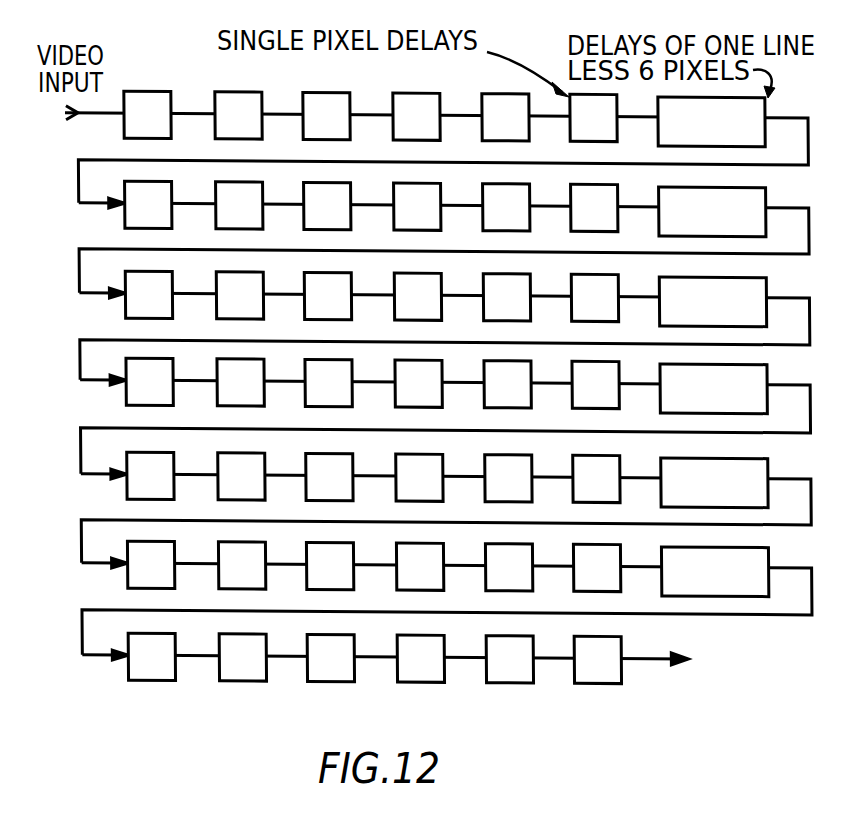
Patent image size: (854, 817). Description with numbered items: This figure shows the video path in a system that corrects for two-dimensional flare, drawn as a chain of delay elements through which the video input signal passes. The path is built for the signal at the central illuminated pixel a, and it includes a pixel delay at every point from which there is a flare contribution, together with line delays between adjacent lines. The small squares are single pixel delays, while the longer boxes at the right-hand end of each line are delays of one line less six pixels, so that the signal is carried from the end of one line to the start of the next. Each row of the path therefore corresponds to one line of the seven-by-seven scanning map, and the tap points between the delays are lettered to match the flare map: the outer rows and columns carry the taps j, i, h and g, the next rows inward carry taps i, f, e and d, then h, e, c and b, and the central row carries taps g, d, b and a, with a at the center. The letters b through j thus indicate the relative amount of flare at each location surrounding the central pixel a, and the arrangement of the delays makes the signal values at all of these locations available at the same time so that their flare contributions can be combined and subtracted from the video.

The central illuminated pixel a is at (404, 387).
The pixel flare location b is at (375, 404).
The pixel flare location c is at (374, 390).
The pixel flare location d is at (373, 405).
The pixel flare location e is at (373, 405).
The pixel flare location f is at (374, 390).
The pixel flare location g is at (371, 405).
The pixel flare location h is at (370, 405).
The pixel flare location i is at (371, 405).
The pixel flare location j is at (375, 391).